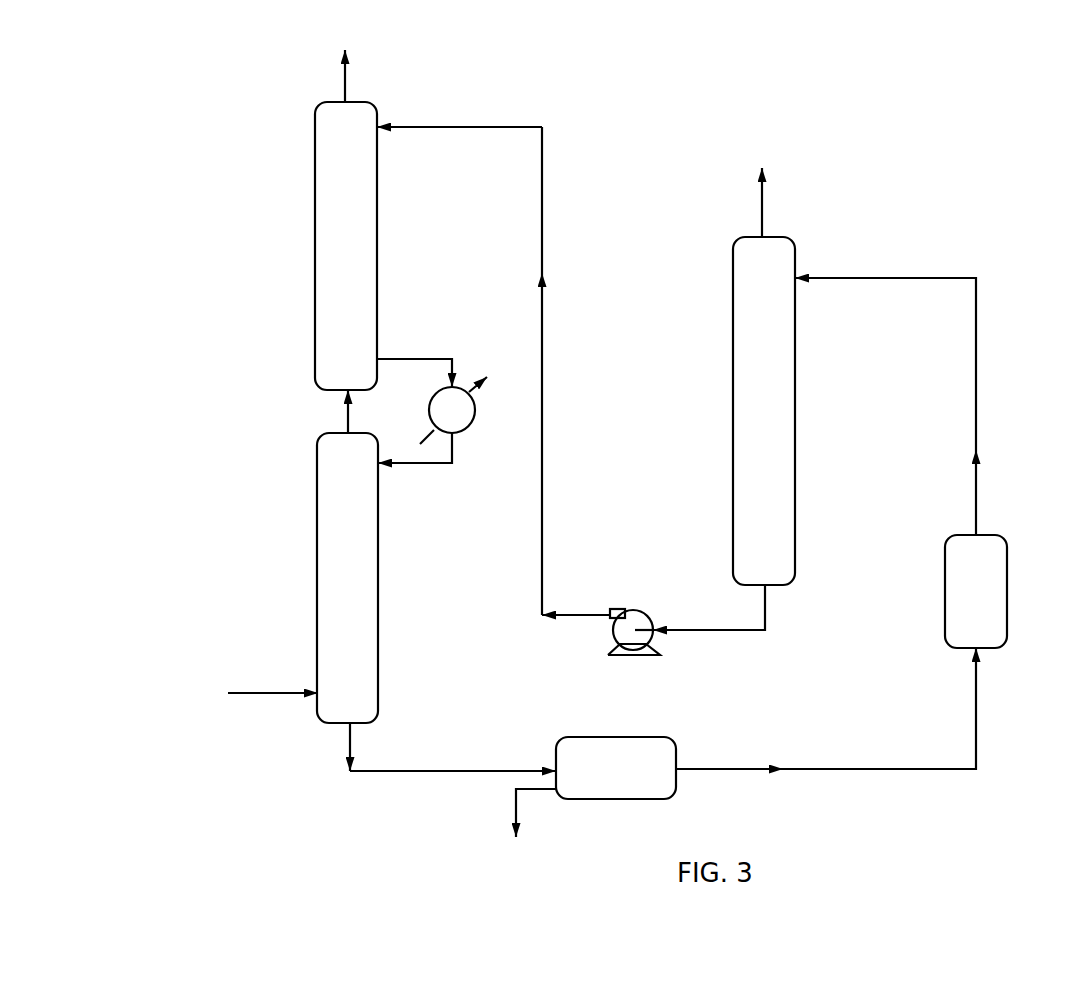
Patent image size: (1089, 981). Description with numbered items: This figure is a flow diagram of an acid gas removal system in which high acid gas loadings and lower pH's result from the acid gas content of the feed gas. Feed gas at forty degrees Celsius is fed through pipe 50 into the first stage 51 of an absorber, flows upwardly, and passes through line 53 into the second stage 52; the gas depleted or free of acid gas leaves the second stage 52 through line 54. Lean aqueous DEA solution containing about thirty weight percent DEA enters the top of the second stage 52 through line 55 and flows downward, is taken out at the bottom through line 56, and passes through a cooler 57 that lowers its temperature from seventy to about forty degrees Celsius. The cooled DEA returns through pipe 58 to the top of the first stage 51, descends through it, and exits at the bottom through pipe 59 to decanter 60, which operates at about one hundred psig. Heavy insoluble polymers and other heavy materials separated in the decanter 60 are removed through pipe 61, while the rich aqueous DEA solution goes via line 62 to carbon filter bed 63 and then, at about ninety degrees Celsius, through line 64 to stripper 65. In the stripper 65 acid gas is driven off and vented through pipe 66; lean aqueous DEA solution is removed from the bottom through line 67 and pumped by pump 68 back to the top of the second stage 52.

The pipe 50 is at (292, 690).
The first stage of absorber 51 is at (360, 594).
The second stage of absorber 52 is at (358, 267).
The line 53 is at (345, 416).
The line 54 is at (347, 88).
The line 55 is at (470, 127).
The line 56 is at (415, 359).
The cooler 57 is at (472, 428).
The pipe 58 is at (422, 463).
The pipe 59 is at (413, 771).
The decanter 60 is at (630, 782).
The pipe 61 is at (514, 811).
The line 62 is at (826, 769).
The carbon filter bed 63 is at (988, 606).
The line 64 is at (976, 355).
The stripper 65 is at (776, 414).
The pipe 66 is at (764, 207).
The line 67 is at (722, 630).
The pump 68 is at (640, 609).